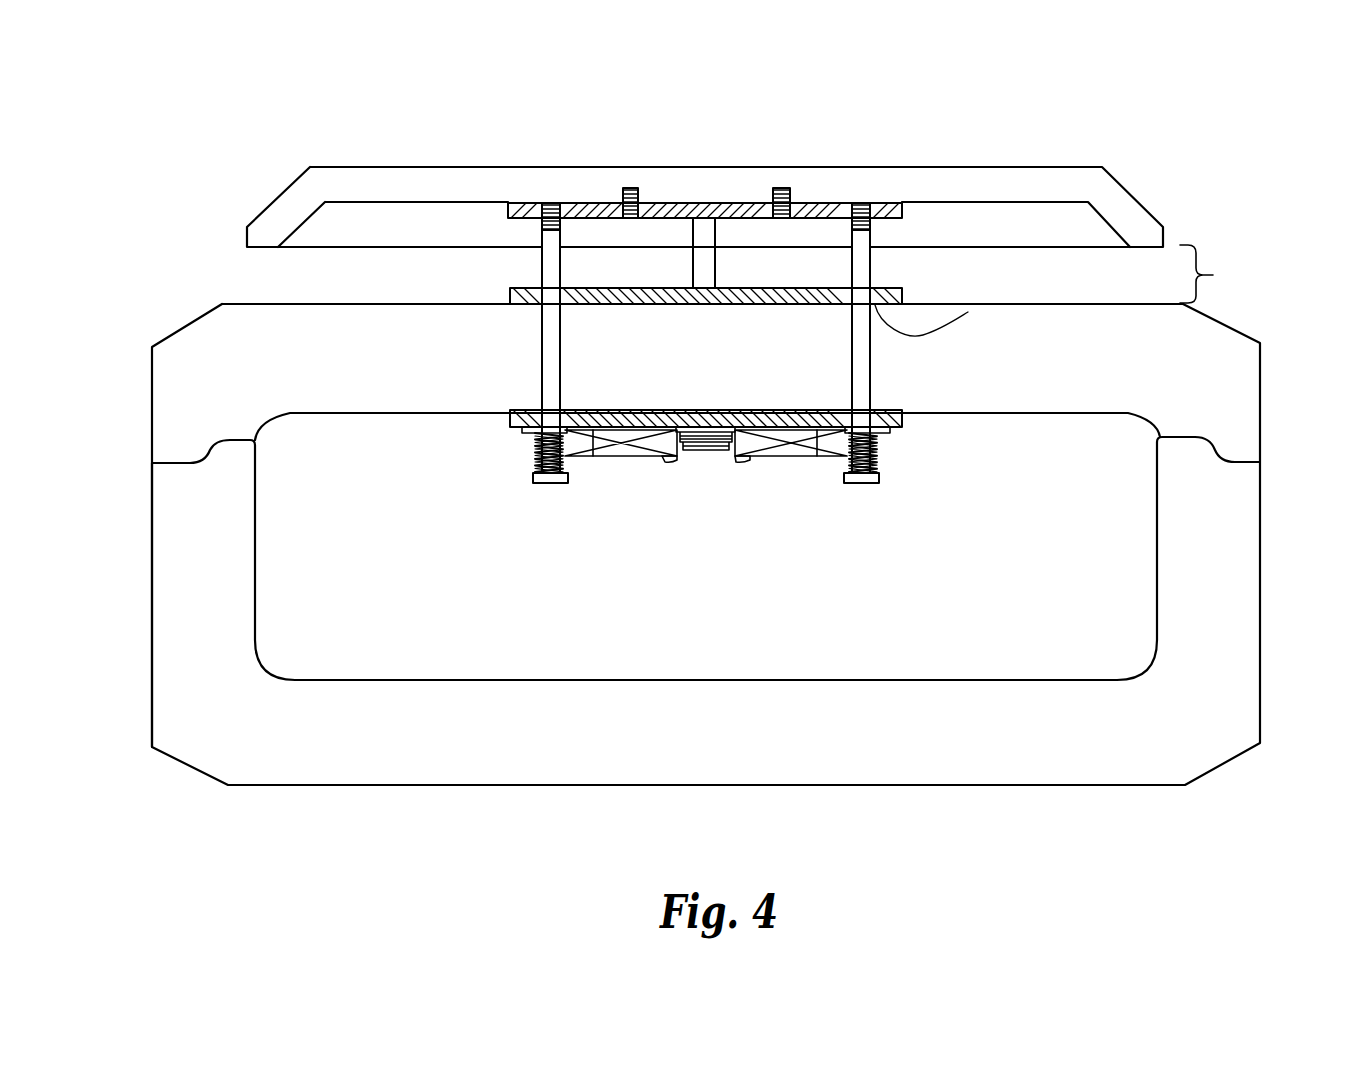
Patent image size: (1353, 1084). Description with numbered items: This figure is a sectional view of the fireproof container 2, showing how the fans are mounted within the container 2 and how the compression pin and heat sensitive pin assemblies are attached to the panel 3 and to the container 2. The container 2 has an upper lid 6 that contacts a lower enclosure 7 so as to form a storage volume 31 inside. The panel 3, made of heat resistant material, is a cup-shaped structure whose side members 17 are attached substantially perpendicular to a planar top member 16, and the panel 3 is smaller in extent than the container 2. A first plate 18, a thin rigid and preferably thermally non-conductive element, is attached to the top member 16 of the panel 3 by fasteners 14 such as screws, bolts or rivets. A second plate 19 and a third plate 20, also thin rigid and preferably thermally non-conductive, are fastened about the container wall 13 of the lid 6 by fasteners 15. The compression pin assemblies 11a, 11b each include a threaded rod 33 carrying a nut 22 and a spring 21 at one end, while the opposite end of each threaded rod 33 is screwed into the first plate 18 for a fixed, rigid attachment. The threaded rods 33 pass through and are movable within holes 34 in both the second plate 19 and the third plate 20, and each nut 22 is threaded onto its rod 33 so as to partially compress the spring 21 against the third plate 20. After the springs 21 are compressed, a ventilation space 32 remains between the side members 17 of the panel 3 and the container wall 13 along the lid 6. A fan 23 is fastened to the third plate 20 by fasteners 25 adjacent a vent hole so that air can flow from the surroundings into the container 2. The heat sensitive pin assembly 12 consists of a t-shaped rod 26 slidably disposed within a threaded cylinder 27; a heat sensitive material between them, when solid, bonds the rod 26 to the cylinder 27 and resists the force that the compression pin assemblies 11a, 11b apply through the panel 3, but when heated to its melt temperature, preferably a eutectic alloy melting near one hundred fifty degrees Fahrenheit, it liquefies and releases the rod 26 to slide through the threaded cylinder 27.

The container 2 is at (1260, 588).
The panel 3 is at (1115, 175).
The upper lid 6 is at (152, 432).
The lower enclosure 7 is at (152, 553).
The compression pin assembly 11a is at (527, 220).
The compression pin assembly 11b is at (905, 212).
The heat sensitive pin assembly 12 is at (713, 218).
The container wall 13 is at (345, 330).
The fasteners 14 is at (628, 218).
The fasteners 15 is at (538, 288).
The top member 16 is at (540, 203).
The side members 17 is at (277, 207).
The first plate 18 is at (875, 224).
The second plate 19 is at (528, 293).
The third plate 20 is at (905, 422).
The spring 21 is at (537, 452).
The nut 22 is at (530, 480).
The fan 23 is at (620, 460).
The fasteners 25 is at (667, 460).
The t-shaped rod 26 is at (697, 218).
The threaded cylinder 27 is at (675, 447).
The storage volume 31 is at (872, 632).
The ventilation space 32 is at (1222, 274).
The threaded rod 33 is at (593, 457).
The holes 34 is at (533, 410).